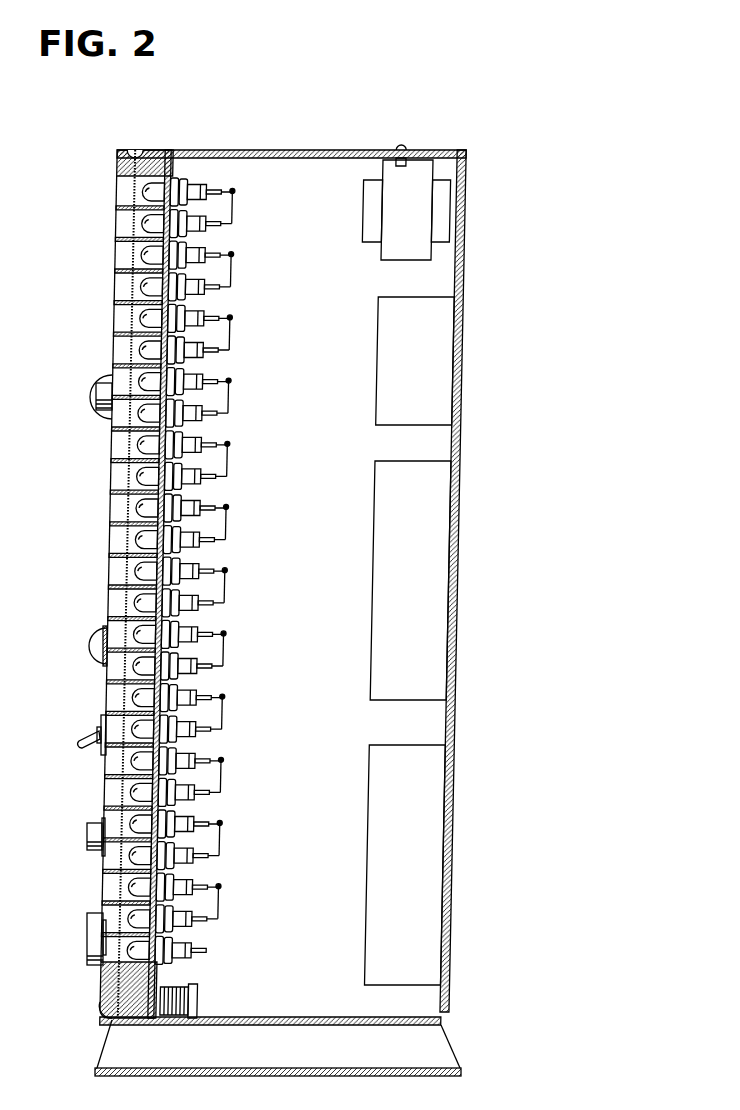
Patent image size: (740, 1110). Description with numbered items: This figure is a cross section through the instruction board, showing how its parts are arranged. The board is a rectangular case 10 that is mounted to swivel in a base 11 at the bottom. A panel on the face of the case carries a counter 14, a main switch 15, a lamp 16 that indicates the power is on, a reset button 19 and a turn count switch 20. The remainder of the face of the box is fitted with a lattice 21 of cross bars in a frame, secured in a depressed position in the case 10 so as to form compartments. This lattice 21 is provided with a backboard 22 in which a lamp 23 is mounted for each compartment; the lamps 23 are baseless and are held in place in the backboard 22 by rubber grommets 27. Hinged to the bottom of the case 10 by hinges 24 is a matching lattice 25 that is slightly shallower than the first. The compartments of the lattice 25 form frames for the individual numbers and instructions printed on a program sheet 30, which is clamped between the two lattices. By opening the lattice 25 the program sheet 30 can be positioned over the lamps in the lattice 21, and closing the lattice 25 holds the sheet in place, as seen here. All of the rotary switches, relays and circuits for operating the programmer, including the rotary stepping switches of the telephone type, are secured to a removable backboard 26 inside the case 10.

The case 10 is at (266, 962).
The base 11 is at (99, 1050).
The counter 14 is at (99, 395).
The main switch 15 is at (98, 729).
The lamp 16 is at (88, 647).
The RESET button 19 is at (87, 837).
The TURN COUNT switch 20 is at (87, 944).
The lattice 21 is at (142, 200).
The backboard 22 is at (179, 157).
The lamp 23 is at (142, 293).
The hinge 24 is at (99, 1001).
The matching lattice 25 is at (119, 522).
The removable backboard 26 is at (461, 494).
The rubber grommet 27 is at (199, 379).
The program sheet 30 is at (129, 476).